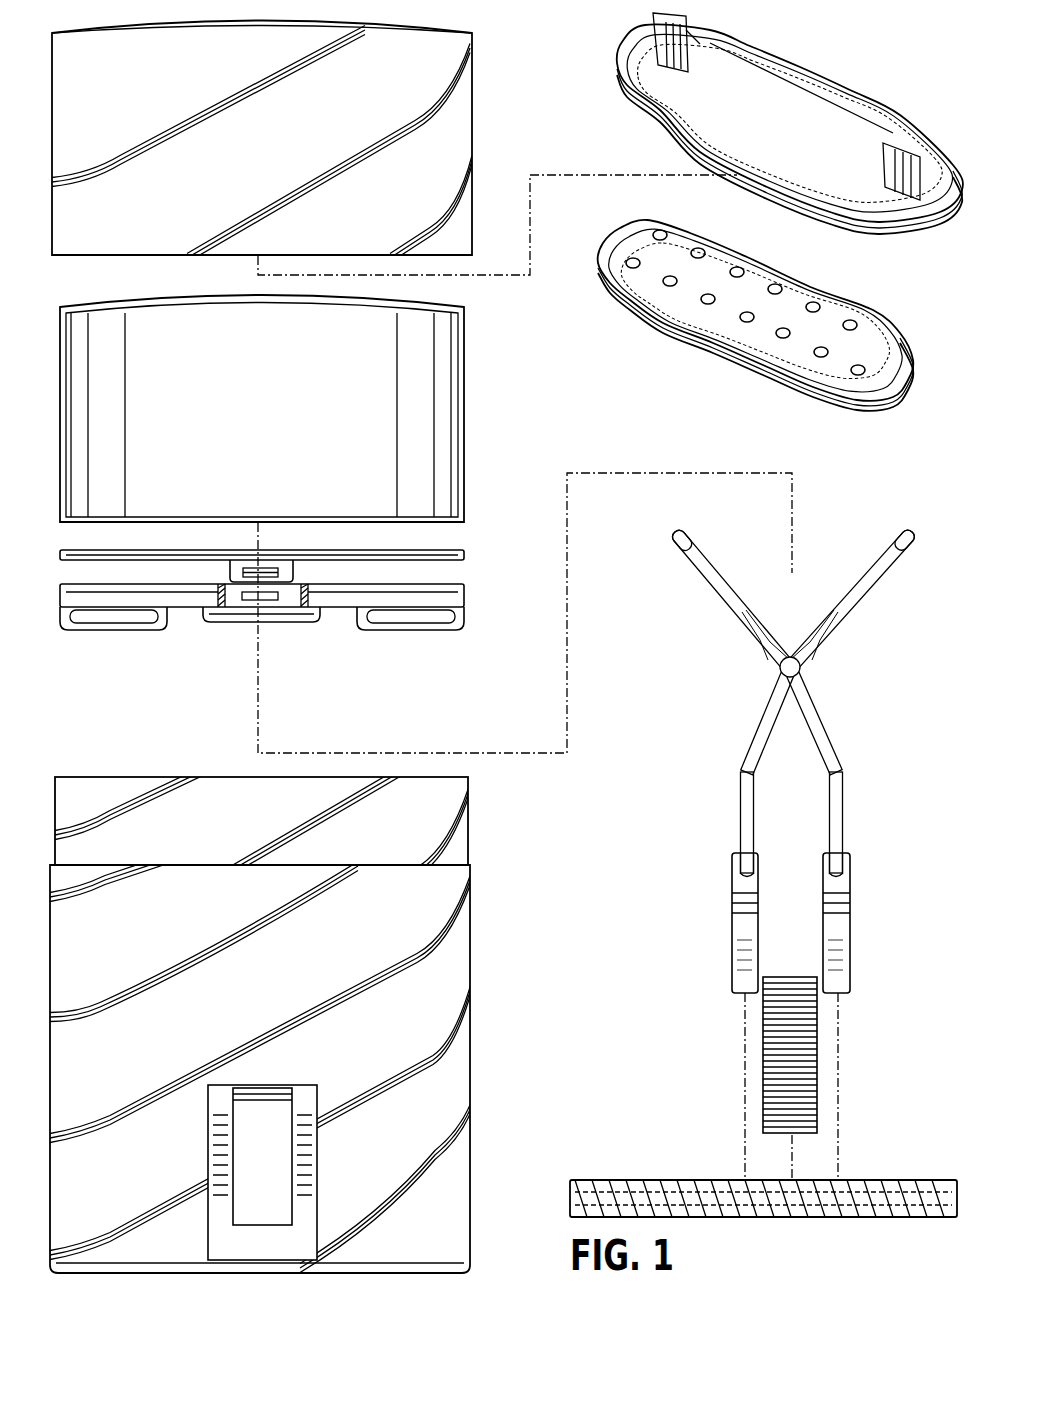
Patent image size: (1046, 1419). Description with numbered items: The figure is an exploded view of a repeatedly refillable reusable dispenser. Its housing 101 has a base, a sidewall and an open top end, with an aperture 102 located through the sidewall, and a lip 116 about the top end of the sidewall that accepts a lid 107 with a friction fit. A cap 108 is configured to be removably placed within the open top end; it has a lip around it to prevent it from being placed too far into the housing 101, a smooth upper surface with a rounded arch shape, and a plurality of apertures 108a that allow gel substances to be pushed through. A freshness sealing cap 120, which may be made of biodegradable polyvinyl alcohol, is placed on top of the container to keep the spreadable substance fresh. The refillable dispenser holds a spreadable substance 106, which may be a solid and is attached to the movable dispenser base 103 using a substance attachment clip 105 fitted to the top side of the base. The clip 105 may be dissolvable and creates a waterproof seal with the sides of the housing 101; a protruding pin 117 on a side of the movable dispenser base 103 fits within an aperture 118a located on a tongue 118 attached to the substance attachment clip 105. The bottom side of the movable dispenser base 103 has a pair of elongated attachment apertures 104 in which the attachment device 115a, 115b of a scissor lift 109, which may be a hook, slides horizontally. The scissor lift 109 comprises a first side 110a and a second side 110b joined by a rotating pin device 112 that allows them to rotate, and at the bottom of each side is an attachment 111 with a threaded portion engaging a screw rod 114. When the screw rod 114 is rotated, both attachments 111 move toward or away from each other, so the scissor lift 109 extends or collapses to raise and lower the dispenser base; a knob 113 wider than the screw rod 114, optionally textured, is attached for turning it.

The housing 101 is at (470, 965).
The aperture 102 is at (272, 1197).
The movable dispenser base 103 is at (230, 622).
The attachment apertures 104 is at (130, 630).
The substance attachment clip 105 is at (464, 553).
The spreadable substance 106 is at (464, 393).
The lid 107 is at (472, 40).
The cap 108 is at (885, 398).
The apertures 108a is at (747, 322).
The scissor lift 109 is at (763, 891).
The first side 110a is at (878, 572).
The second side 110b is at (716, 592).
The attachment 111 is at (732, 893).
The rotating pin device 112 is at (786, 677).
The knob 113 is at (817, 1078).
The screw rod 114 is at (790, 1218).
The attachment device 115a is at (898, 530).
The attachment device 115b is at (692, 535).
The lip 116 is at (55, 805).
The protruding pin 117 is at (262, 600).
The tongue 118 is at (293, 568).
The aperture 118a is at (243, 572).
The freshness sealing cap 120 is at (813, 93).